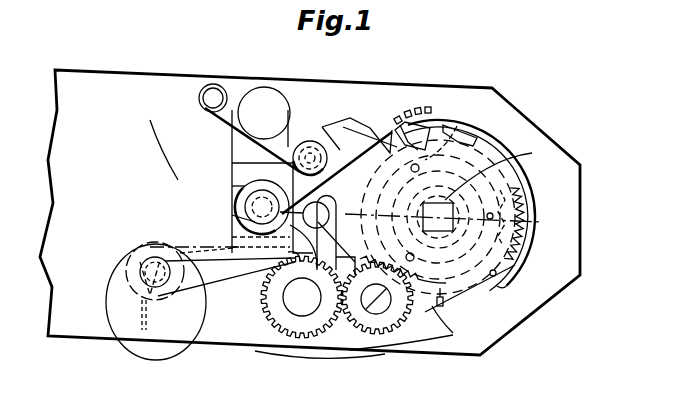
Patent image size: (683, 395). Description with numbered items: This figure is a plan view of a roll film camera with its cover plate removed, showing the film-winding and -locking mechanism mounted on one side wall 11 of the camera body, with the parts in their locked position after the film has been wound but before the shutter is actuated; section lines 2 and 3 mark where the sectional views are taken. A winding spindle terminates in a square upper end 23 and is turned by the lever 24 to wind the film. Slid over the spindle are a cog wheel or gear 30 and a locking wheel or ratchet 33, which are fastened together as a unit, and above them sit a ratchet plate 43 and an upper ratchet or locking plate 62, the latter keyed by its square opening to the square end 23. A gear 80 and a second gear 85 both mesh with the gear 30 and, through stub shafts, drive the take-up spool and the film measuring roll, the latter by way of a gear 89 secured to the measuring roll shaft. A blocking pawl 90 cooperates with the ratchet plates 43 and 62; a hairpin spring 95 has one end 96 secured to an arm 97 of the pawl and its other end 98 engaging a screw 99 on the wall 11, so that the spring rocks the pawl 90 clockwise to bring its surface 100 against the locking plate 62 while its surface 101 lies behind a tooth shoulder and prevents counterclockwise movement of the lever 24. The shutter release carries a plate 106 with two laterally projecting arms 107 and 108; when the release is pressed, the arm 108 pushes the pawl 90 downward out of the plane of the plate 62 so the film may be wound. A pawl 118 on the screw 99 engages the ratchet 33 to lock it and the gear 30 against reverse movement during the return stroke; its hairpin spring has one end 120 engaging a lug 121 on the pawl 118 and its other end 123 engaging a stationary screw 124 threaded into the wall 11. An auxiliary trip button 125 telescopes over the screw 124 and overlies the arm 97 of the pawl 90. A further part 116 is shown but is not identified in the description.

The section line 2- 2 is at (205, 98).
The section line 3- 3 is at (547, 345).
The side wall 11 is at (497, 350).
The square upper end 23 is at (522, 156).
The lever 24 is at (163, 345).
The cog wheel or gear 30 is at (444, 302).
The locking wheel or ratchet 33 is at (532, 201).
The ratchet plate 43 is at (449, 337).
The upper ratchet or locking plate 62 is at (524, 180).
The gear 80 is at (420, 116).
The second gear 85 is at (379, 304).
The gear 89 is at (280, 322).
The pawl 90 is at (357, 132).
The hairpin spring 95 is at (327, 150).
The end of hairpin spring 96 is at (232, 186).
The arm of pawl 97 is at (230, 163).
The other end of hairpin spring 98 is at (404, 244).
The screw 99 is at (240, 235).
The surface of pawl 100 is at (428, 155).
The surface of pawl 101 is at (398, 128).
The plate 106 is at (288, 88).
The arm 107 is at (213, 120).
The arm 108 is at (315, 133).
The link 116 is at (358, 128).
The pawl 118 is at (404, 293).
The end of hairpin spring 120 is at (293, 258).
The lug 121 is at (340, 263).
The other end of hairpin spring 123 is at (235, 216).
The stationary screw 124 is at (240, 200).
The trip button 125 is at (170, 185).